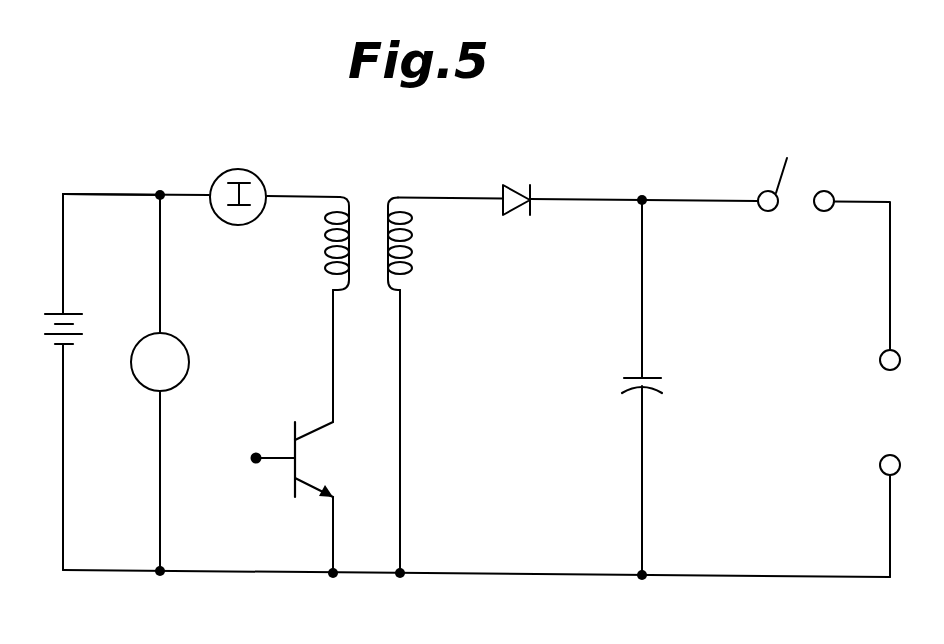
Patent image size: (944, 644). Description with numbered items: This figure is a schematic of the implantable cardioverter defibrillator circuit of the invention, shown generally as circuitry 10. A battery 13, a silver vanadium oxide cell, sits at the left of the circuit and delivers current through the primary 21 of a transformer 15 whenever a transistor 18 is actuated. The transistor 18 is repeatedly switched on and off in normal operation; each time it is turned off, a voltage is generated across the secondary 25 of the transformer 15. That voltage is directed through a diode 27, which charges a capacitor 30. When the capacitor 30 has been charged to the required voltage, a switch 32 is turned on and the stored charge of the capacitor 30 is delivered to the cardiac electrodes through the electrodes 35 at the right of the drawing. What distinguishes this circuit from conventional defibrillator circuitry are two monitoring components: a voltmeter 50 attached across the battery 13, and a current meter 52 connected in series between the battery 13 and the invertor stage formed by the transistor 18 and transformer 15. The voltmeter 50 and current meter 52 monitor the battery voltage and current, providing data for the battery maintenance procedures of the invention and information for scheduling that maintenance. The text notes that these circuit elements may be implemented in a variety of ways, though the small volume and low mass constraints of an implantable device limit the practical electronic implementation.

The circuitry 10 is at (94, 172).
The battery 13 is at (48, 313).
The transformer 15 is at (394, 195).
The transistor 18 is at (293, 465).
The primary 21 is at (323, 236).
The secondary 25 is at (414, 250).
The diode 27 is at (512, 185).
The capacitor 30 is at (625, 378).
The switch 32 is at (774, 192).
The electrodes 35 is at (882, 367).
The voltmeter 50 is at (174, 338).
The current meter 52 is at (237, 168).